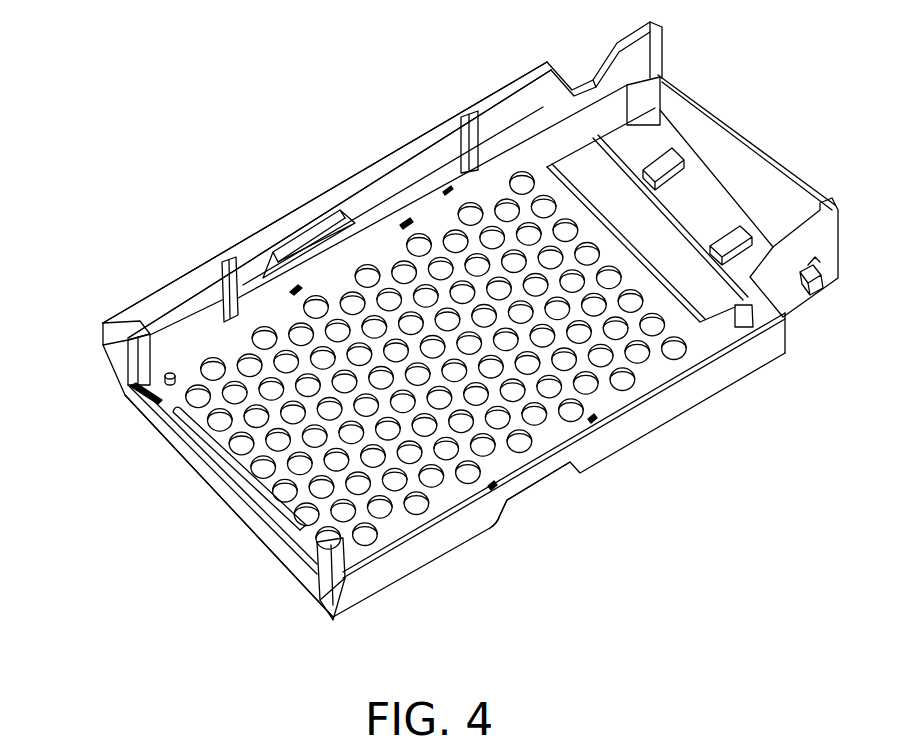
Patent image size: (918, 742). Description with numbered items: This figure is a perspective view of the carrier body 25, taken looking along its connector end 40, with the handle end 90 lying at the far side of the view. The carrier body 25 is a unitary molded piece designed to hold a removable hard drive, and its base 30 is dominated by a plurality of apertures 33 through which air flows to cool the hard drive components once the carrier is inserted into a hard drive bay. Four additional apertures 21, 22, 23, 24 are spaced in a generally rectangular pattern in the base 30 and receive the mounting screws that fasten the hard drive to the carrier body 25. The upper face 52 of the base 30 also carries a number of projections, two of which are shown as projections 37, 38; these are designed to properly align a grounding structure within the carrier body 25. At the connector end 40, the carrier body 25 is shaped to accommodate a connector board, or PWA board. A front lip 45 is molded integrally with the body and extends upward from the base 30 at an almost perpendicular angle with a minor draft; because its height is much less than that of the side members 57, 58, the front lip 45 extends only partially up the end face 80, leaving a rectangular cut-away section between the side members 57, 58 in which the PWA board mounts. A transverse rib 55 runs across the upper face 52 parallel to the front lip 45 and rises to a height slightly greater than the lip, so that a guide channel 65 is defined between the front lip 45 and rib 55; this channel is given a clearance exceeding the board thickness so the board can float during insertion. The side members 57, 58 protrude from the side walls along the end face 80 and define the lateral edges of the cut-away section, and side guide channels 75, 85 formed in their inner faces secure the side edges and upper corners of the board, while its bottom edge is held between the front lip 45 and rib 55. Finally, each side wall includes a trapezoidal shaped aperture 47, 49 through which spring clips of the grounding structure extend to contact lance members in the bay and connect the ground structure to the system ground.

The aperture 21 is at (291, 290).
The aperture 22 is at (404, 205).
The aperture 23 is at (590, 418).
The aperture 24 is at (490, 485).
The carrier body 25 is at (282, 203).
The base 30 is at (455, 350).
The apertures 33 is at (383, 510).
The projection 37 is at (170, 372).
The projection 38 is at (452, 190).
The connector end 40 is at (120, 300).
The front lip 45 is at (178, 446).
The trapezoidal shaped aperture 47 is at (530, 502).
The trapezoidal shaped aperture 49 is at (300, 255).
The upper face 52 is at (350, 250).
The rib 55 is at (298, 533).
The side member 57 is at (124, 366).
The side member 58 is at (330, 607).
The guide channel 65 is at (145, 410).
The side guide channel 75 is at (126, 348).
The end face 80 is at (116, 418).
The side guide channel 85 is at (322, 603).
The handle end 90 is at (825, 298).